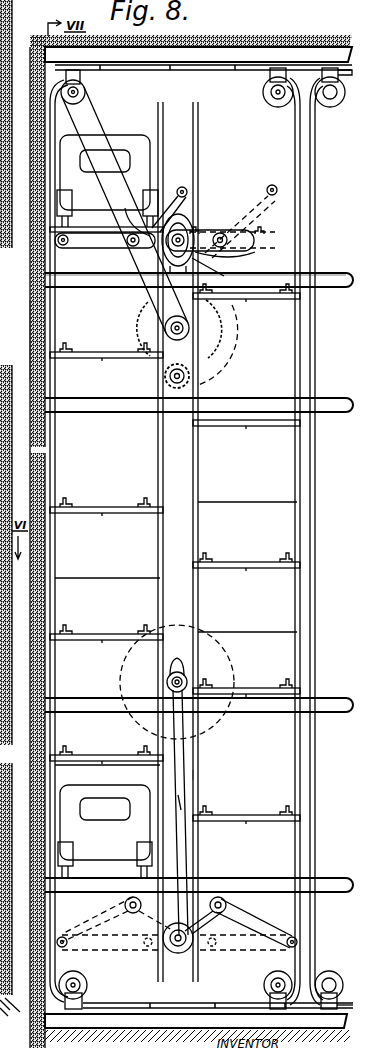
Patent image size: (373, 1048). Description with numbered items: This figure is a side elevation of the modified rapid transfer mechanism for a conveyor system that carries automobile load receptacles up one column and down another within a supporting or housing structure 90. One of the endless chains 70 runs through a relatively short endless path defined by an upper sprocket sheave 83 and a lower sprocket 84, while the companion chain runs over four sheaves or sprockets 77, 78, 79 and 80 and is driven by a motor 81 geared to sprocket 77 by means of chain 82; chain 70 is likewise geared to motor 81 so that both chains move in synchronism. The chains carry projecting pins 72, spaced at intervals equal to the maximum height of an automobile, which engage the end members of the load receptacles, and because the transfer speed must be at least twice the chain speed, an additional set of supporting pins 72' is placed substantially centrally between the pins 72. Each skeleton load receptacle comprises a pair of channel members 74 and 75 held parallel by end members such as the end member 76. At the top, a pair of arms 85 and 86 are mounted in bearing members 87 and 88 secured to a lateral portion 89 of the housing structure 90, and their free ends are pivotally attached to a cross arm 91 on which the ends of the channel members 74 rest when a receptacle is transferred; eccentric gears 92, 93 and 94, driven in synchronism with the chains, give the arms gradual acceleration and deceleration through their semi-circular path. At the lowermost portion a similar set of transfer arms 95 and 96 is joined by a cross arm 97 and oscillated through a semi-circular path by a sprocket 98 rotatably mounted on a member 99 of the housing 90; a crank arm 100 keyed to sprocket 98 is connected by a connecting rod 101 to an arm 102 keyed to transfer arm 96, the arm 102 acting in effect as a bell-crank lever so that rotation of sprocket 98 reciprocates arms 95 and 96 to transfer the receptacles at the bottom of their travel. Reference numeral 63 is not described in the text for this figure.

The shaft wall 63 is at (12, 132).
The endless chain 70 is at (198, 776).
The projecting pins 72 is at (175, 524).
The additional supporting pins 72' is at (176, 506).
The channel member 74 is at (194, 228).
The channel member 75 is at (138, 346).
The end member 76 is at (102, 358).
The sprocket 77 is at (86, 90).
The sprocket 78 is at (263, 92).
The sprocket 79 is at (264, 990).
The sprocket 80 is at (88, 988).
The motor 81 is at (221, 345).
The chain 82 is at (140, 303).
The upper sprocket sheave 83 is at (194, 224).
The lower sprocket 84 is at (170, 946).
The arm 85 is at (180, 187).
The arm 86 is at (262, 212).
The bearing member 87 is at (120, 250).
The bearing member 88 is at (255, 241).
The lateral portion 89 is at (328, 278).
The supporting or housing structure 90 is at (30, 346).
The cross arm 91 is at (228, 230).
The eccentric gear 92 is at (120, 210).
The eccentric gear 93 is at (224, 288).
The eccentric gear 94 is at (253, 255).
The transfer arm 95 is at (114, 934).
The transfer arm 96 is at (207, 940).
The cross arm 97 is at (255, 942).
The sprocket 98 is at (200, 635).
The member 99 is at (78, 698).
The crank arm 100 is at (186, 722).
The connecting rod 101 is at (184, 798).
The arm 102 is at (226, 908).